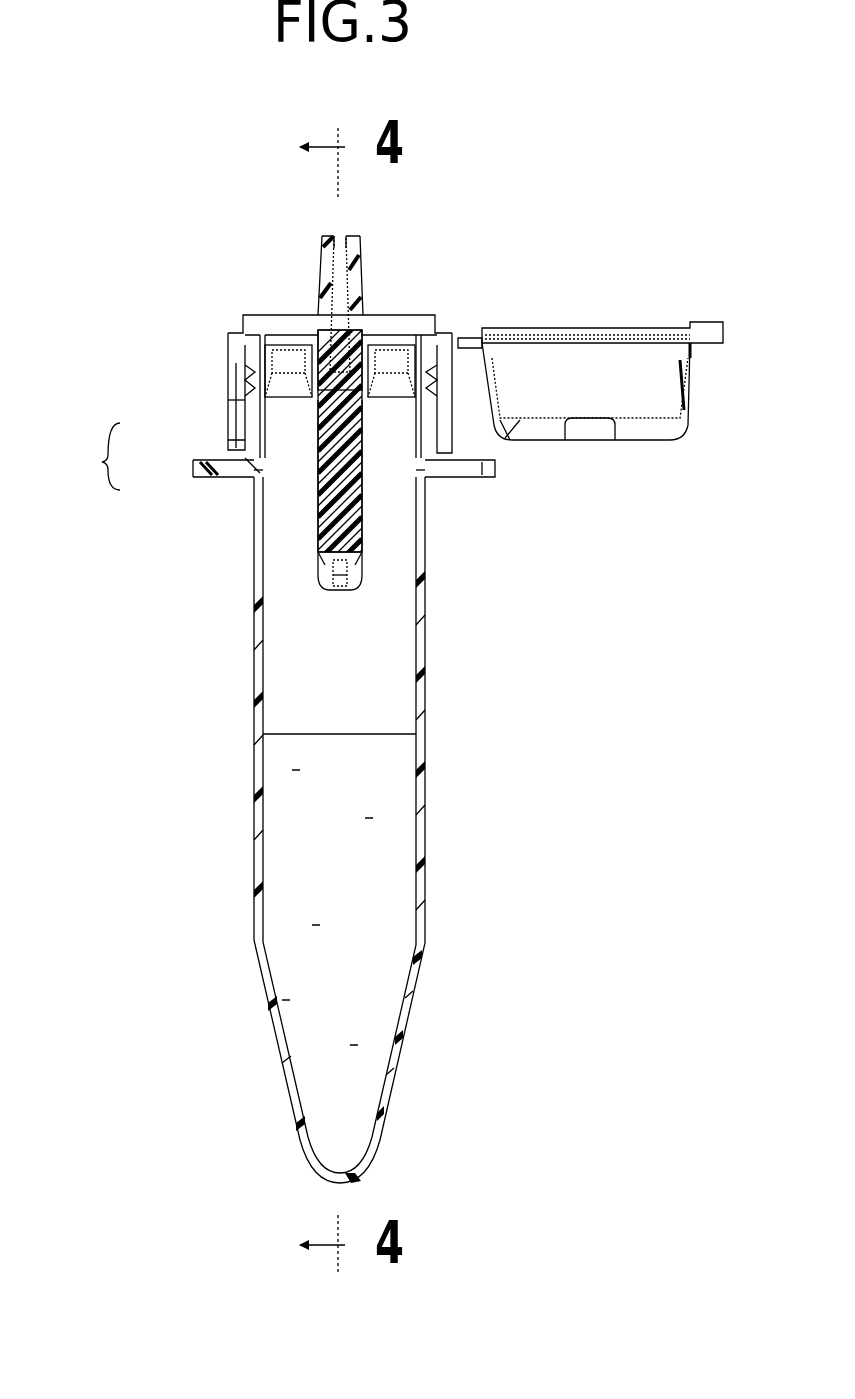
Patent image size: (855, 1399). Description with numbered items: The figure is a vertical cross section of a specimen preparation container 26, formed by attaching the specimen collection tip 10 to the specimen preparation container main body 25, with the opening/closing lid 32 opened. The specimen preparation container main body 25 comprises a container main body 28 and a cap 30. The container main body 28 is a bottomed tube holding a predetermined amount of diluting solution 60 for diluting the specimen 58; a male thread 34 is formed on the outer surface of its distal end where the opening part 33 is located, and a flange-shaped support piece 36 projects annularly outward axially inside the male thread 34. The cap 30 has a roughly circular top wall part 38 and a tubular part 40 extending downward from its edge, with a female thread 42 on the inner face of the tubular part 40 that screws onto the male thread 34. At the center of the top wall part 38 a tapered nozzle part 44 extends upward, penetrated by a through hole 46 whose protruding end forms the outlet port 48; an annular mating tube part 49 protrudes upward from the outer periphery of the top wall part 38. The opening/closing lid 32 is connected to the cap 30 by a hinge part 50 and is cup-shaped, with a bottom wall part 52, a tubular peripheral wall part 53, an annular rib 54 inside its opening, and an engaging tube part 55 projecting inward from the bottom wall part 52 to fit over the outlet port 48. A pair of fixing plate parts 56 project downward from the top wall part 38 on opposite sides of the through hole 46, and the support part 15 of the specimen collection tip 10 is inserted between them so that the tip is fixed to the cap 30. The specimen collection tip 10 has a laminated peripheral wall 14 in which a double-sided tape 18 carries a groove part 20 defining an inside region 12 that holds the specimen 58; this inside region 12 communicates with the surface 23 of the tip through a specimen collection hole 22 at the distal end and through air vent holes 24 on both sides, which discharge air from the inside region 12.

The specimen collection tip 10 is at (316, 533).
The inside region 12 is at (362, 582).
The peripheral wall 14 is at (368, 490).
The support part 15 is at (372, 388).
The double-sided tape 18 is at (358, 545).
The groove part 20 is at (330, 580).
The specimen collection hole 22 is at (346, 590).
The surface 23 is at (318, 492).
The air vent hole 24 is at (362, 555).
The specimen preparation container main body 25 is at (99, 456).
The specimen preparation container 26 is at (556, 210).
The container main body 28 is at (246, 500).
The cap 30 is at (227, 437).
The opening/closing lid 32 is at (694, 446).
The opening part 33 is at (262, 340).
The male thread 34 is at (243, 378).
The support piece 36 is at (470, 477).
The top wall part 38 is at (292, 328).
The tubular part 40 is at (232, 408).
The female thread 42 is at (442, 395).
The nozzle part 44 is at (368, 240).
The through hole 46 is at (347, 290).
The outlet port 48 is at (340, 235).
The mating tube part 49 is at (242, 325).
The hinge part 50 is at (458, 340).
The bottom wall part 52 is at (652, 440).
The peripheral wall part 53 is at (690, 402).
The annular rib 54 is at (496, 333).
The engaging tube part 55 is at (590, 436).
The fixing plate part 56 is at (310, 400).
The specimen 58 is at (355, 578).
The diluting solution 60 is at (420, 870).